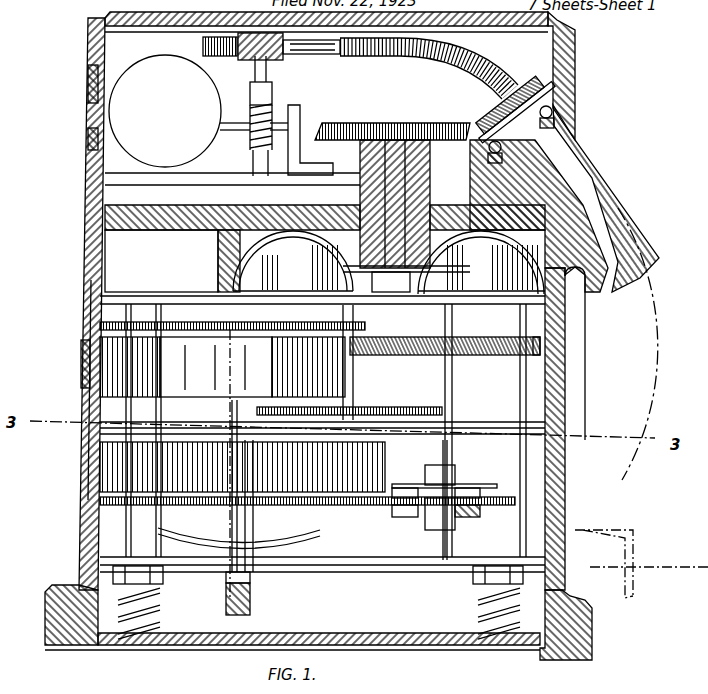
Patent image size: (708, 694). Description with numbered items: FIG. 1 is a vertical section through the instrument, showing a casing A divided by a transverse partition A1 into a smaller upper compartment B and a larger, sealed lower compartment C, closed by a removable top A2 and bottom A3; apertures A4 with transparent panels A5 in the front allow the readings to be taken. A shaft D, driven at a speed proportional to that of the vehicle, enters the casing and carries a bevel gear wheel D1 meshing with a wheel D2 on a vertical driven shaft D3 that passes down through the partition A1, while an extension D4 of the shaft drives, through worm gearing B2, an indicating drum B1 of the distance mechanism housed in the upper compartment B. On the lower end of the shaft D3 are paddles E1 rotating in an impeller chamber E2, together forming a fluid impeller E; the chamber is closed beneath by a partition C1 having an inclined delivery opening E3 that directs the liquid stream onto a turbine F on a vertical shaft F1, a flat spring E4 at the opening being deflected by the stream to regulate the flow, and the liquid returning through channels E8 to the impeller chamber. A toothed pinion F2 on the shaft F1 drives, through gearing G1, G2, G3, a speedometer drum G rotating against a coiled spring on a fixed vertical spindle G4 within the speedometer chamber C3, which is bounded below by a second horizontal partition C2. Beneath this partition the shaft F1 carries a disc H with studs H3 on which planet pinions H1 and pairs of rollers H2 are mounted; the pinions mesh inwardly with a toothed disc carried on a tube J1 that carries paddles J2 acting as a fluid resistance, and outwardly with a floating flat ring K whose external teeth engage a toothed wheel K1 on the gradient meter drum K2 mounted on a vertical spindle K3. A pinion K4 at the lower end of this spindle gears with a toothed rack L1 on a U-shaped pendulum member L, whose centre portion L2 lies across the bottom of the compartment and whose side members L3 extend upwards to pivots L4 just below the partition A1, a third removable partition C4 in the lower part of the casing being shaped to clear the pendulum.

The casing A is at (90, 172).
The transverse partition A1 is at (125, 216).
The top A2 is at (357, 26).
The bottom A3 is at (356, 634).
The apertures A4 is at (90, 78).
The transparent panels A5 is at (90, 112).
The upper compartment B is at (165, 38).
The indicating drum B1 is at (130, 128).
The worm gearing B2 is at (274, 58).
The lower compartment C is at (322, 584).
The partition C1 is at (540, 300).
The second horizontal partition C2 is at (544, 440).
The speedometer chamber C3 is at (528, 425).
The third removable partition C4 is at (372, 566).
The shaft D is at (576, 194).
The bevel gear wheel D1 is at (522, 90).
The gear wheel D2 is at (424, 124).
The vertical driven shaft D3 is at (468, 158).
The extension of the driven shaft D4 is at (452, 46).
The fluid impeller E is at (434, 287).
The paddles E1 is at (545, 283).
The impeller chamber E2 is at (270, 205).
The inclined delivery opening E3 is at (527, 314).
The flat spring E4 is at (540, 342).
The return channels E8 is at (218, 258).
The turbine F is at (535, 348).
The vertical shaft F1 is at (443, 382).
The toothed pinion F2 is at (463, 408).
The speedometer drum G is at (108, 340).
The gearing G1 is at (385, 412).
The gearing G2 is at (356, 346).
The gearing G3 is at (108, 320).
The fixed vertical spindle G4 is at (125, 385).
The disc H is at (497, 486).
The planet pinions H1 is at (480, 512).
The rollers H2 is at (404, 486).
The studs H3 is at (463, 484).
The tube J1 is at (462, 524).
The paddles J2 is at (480, 536).
The flat ring K is at (547, 576).
The toothed wheel K1 is at (100, 500).
The gradient meter drum K2 is at (130, 468).
The vertical spindle K3 is at (242, 540).
The pinion K4 is at (249, 552).
The pendulum member L is at (234, 576).
The toothed rack L1 is at (216, 545).
The centre portion L2 is at (246, 618).
The side members L3 is at (243, 405).
The pivots L4 is at (208, 240).